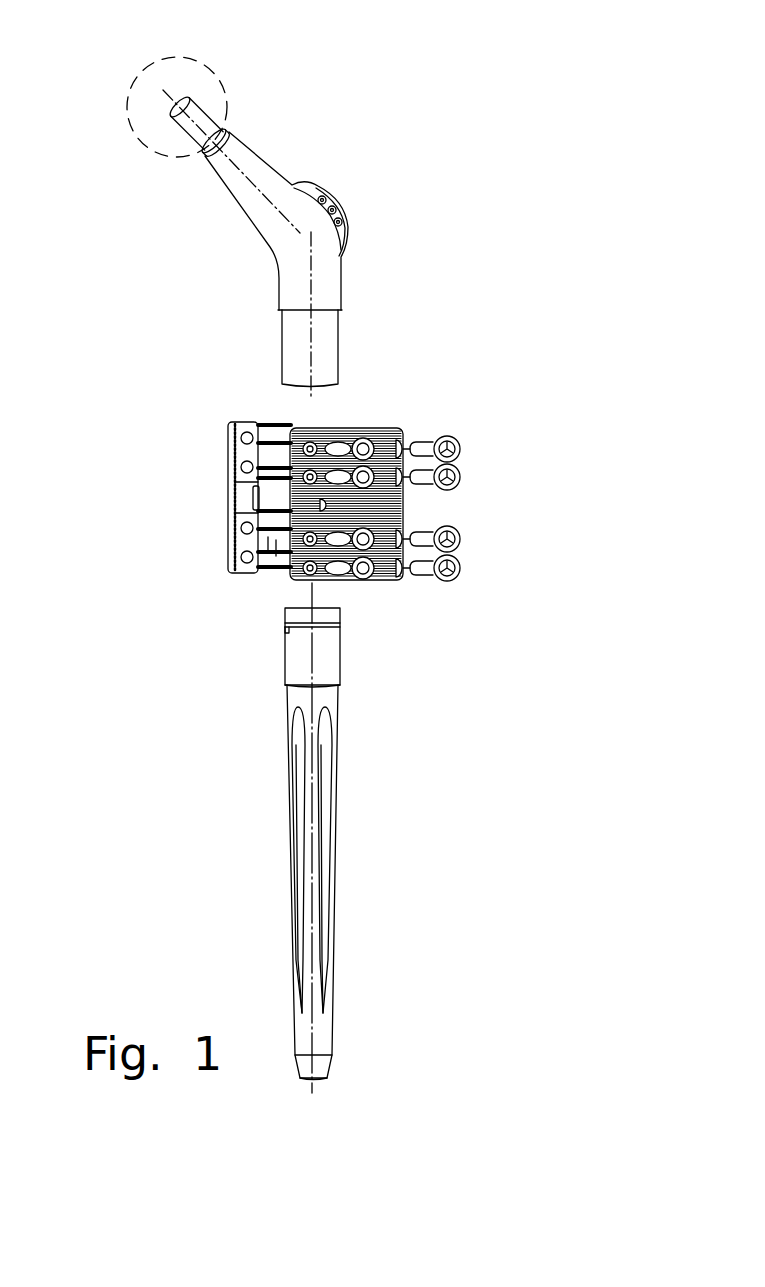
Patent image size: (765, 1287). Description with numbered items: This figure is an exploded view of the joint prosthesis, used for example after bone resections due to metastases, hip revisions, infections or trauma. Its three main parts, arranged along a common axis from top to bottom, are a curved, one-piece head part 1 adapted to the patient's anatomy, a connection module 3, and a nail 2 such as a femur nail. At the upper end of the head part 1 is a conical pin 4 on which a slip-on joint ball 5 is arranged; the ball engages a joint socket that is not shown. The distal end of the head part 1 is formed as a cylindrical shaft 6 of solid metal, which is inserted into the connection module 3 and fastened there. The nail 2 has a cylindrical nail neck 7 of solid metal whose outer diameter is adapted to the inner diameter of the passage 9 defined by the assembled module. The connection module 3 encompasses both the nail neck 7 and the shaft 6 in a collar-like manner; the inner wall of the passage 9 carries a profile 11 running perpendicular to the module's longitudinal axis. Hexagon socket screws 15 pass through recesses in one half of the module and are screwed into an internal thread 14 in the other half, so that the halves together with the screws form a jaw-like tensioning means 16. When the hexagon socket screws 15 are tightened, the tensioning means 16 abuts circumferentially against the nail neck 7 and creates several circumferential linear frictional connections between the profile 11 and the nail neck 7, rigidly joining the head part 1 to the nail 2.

The head part 1 is at (276, 164).
The nail 2 is at (329, 854).
The connection module 3 is at (408, 577).
The conical pin 4 is at (173, 141).
The slip-on joint ball 5 is at (131, 77).
The cylindrical shaft 6 is at (279, 357).
The nail neck 7 is at (283, 646).
The passage 9 is at (341, 593).
The profile 11 is at (273, 547).
The internal thread 14 is at (255, 481).
The hexagon socket screw 15 is at (463, 526).
The jaw-like tensioning means 16 is at (326, 429).